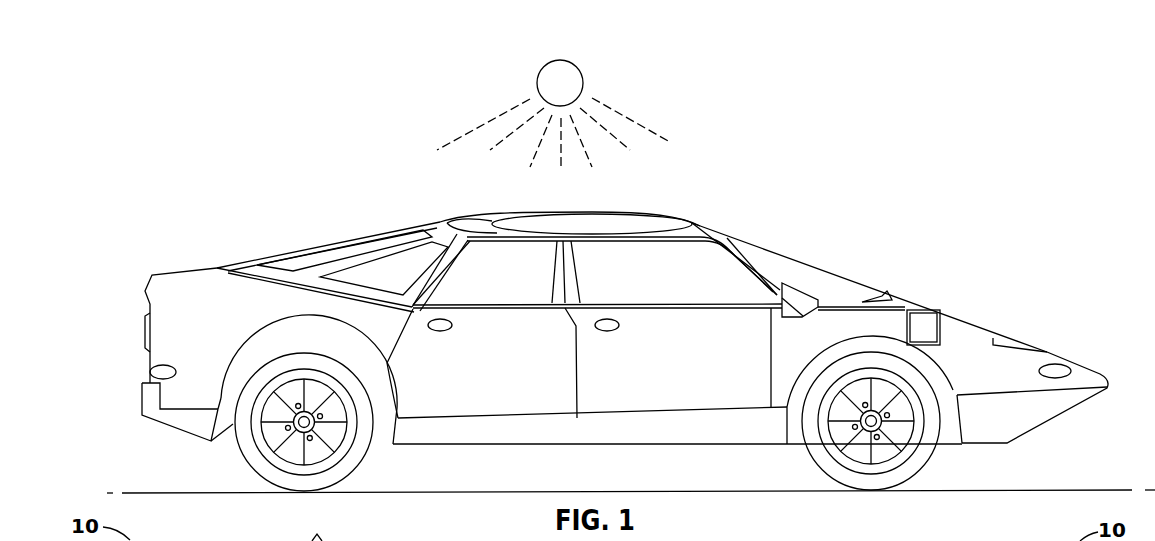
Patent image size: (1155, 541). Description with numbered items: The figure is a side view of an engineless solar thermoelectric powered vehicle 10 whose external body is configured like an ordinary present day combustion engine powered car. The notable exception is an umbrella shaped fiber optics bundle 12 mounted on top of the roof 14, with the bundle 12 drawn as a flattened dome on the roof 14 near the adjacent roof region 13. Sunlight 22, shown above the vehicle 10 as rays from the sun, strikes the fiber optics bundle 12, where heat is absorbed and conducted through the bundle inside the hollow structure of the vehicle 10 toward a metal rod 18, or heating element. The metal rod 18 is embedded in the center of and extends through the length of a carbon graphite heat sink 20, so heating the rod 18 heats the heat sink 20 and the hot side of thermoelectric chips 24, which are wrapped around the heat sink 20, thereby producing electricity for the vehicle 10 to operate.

The solar thermoelectric powered vehicle 10 is at (912, 187).
The umbrella shaped fiber optics bundle 12 is at (630, 219).
The roof 13 is at (703, 231).
The roof 14 is at (482, 224).
The metal rod 18 is at (933, 324).
The carbon graphite heat sink 20 is at (928, 327).
The sunlight 22 is at (636, 123).
The thermoelectric chips 24 is at (941, 334).